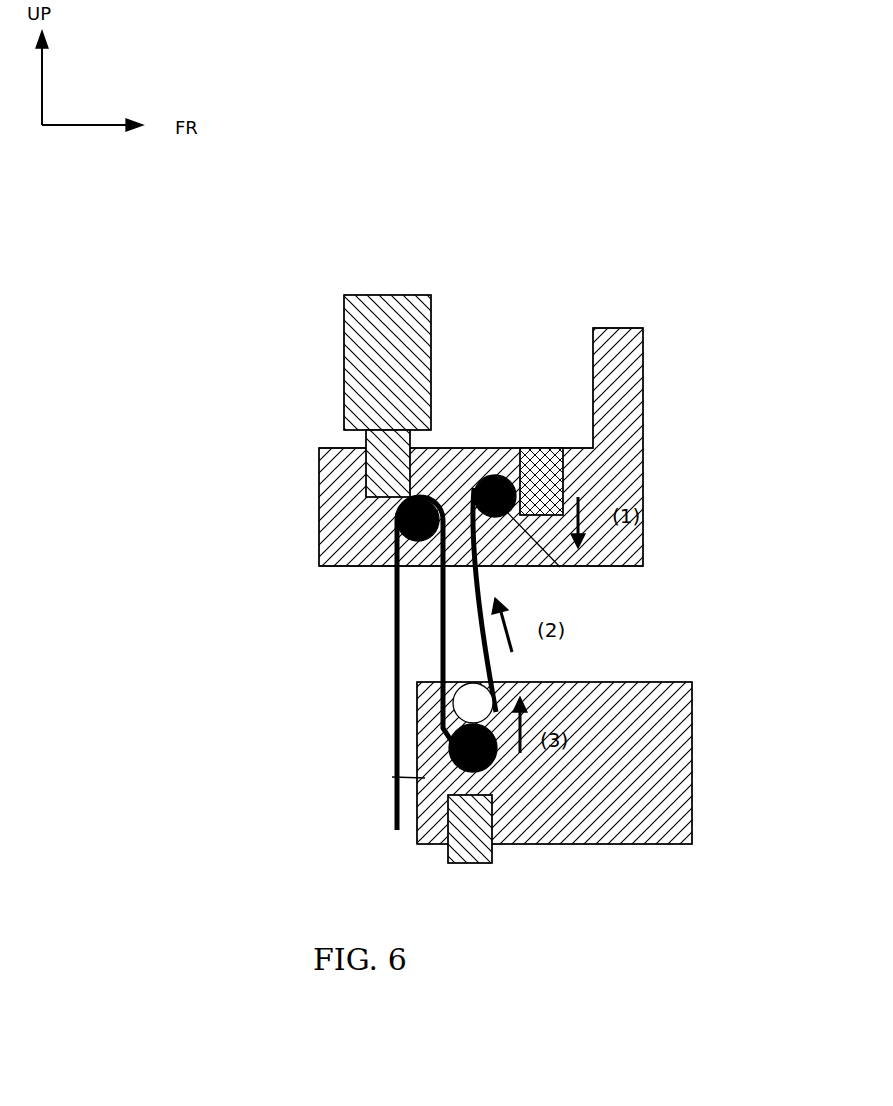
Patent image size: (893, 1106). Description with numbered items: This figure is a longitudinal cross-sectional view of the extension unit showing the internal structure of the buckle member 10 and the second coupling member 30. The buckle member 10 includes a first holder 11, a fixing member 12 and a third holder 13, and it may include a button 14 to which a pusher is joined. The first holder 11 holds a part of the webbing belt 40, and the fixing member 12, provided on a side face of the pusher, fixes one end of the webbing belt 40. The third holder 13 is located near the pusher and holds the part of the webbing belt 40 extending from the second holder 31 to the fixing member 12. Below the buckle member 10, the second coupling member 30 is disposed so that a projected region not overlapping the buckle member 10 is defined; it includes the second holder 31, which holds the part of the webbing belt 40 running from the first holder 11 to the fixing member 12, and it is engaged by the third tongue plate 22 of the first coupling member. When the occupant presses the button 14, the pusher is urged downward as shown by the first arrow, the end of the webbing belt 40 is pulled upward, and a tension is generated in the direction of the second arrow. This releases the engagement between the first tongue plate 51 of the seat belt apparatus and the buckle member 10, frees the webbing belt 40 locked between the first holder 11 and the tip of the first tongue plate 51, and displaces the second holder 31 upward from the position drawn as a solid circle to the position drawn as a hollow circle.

The buckle member 10 is at (330, 497).
The first holder 11 is at (395, 533).
The fixing member 12 is at (512, 470).
The third holder 13 is at (560, 567).
The button 14 is at (541, 470).
The third tongue plate 22 is at (470, 853).
The second coupling member 30 is at (642, 750).
The second holder 31 is at (392, 777).
The webbing belt 40 is at (392, 652).
The first tongue plate 51 is at (377, 331).